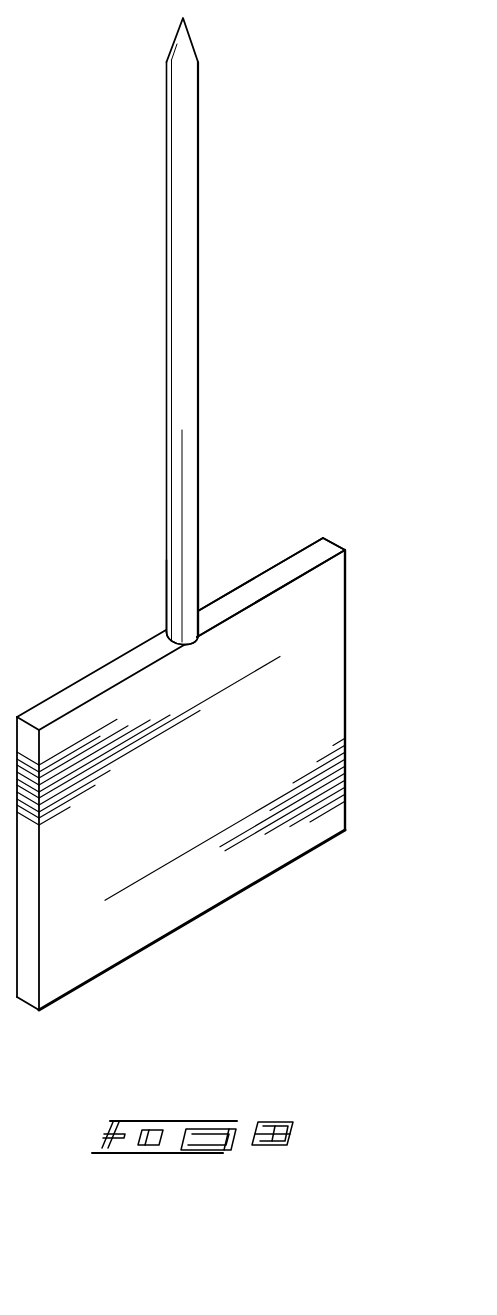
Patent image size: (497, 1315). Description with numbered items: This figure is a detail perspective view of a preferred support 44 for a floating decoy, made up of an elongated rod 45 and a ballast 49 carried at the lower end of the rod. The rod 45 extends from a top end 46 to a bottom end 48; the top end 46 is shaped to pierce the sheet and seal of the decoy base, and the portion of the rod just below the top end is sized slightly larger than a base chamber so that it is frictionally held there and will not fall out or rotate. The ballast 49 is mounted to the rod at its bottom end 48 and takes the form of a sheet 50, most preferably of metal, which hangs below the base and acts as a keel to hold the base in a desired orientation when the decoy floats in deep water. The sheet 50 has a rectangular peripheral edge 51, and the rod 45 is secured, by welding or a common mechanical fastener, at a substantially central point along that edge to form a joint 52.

The support 44 is at (238, 306).
The elongated rod 45 is at (182, 213).
The top end 46 is at (196, 44).
The bottom end 48 is at (177, 617).
The ballast 49 is at (368, 605).
The sheet 50 is at (317, 677).
The peripheral edge 51 is at (322, 552).
The joint 52 is at (173, 647).